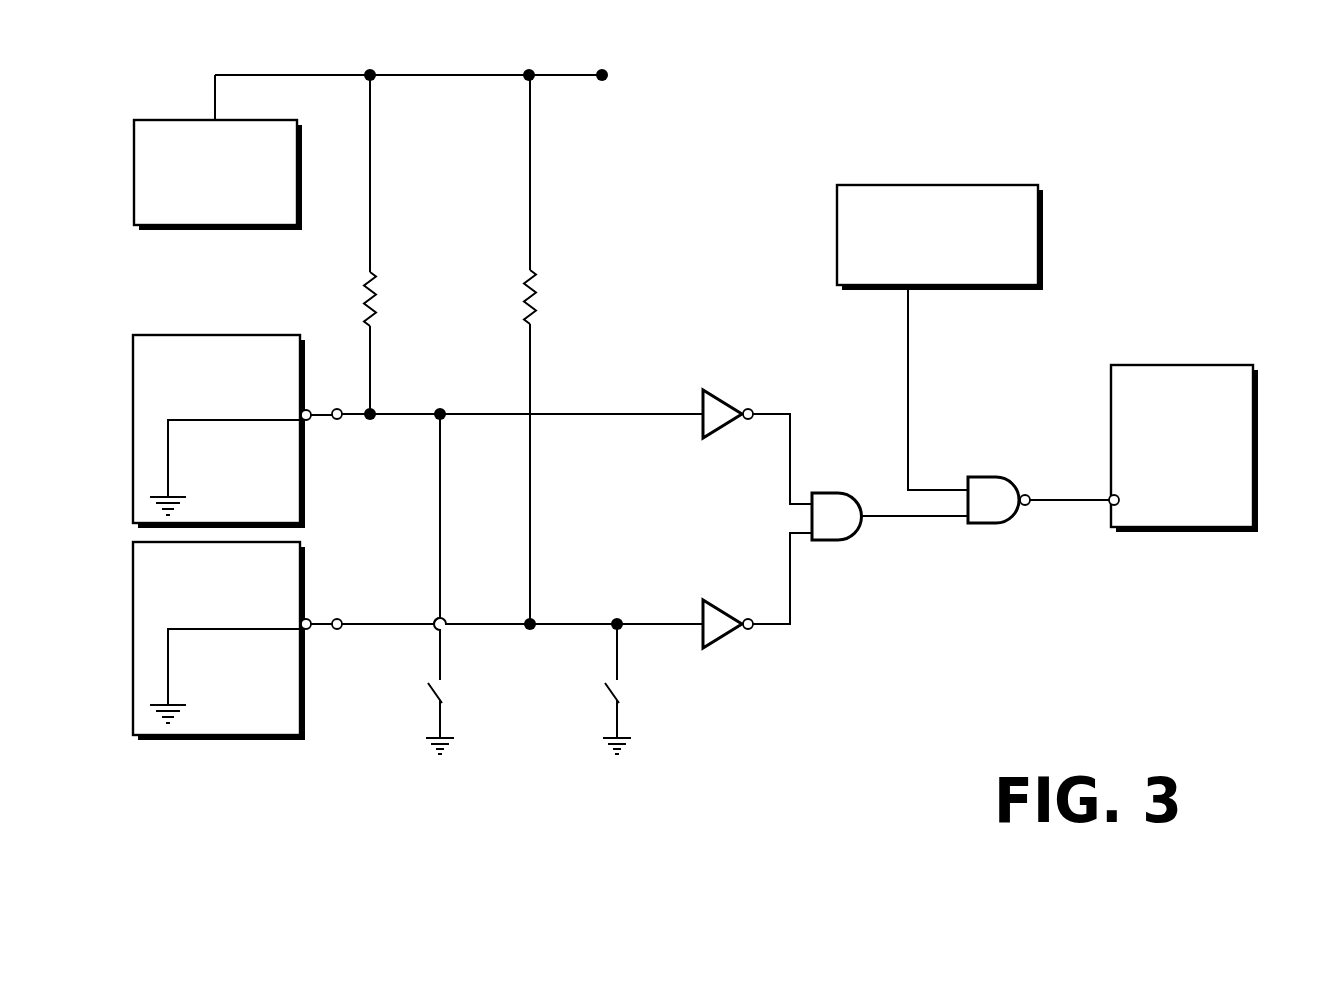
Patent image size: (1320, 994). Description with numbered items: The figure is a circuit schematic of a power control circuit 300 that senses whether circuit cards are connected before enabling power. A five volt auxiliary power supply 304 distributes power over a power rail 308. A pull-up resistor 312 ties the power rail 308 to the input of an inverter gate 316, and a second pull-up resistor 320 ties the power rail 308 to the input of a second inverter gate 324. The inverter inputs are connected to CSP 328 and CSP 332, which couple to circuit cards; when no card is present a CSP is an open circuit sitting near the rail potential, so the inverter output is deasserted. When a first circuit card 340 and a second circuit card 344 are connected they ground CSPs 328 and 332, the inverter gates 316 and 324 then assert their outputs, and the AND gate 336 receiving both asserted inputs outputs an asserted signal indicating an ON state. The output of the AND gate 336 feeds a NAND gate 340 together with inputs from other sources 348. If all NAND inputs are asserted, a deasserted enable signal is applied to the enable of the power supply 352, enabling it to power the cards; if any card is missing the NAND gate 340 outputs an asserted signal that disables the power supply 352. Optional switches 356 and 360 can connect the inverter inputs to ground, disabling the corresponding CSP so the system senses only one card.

The power control circuit 300 is at (890, 97).
The auxiliary power supply 304 is at (238, 228).
The power rail 308 is at (411, 83).
The pull-up resistor 312 is at (366, 297).
The inverter gate 316 is at (711, 396).
The second pull-up resistor 320 is at (526, 311).
The second inverter gate 324 is at (711, 607).
The CSP 328 is at (339, 420).
The CSP 332 is at (339, 630).
The AND gate 336 is at (822, 541).
The NAND gate 340 is at (303, 468).
The circuit card 344 is at (303, 698).
The other sources 348 is at (1040, 259).
The power supply 352 is at (1255, 461).
The switch 356 is at (445, 690).
The switch 360 is at (622, 690).